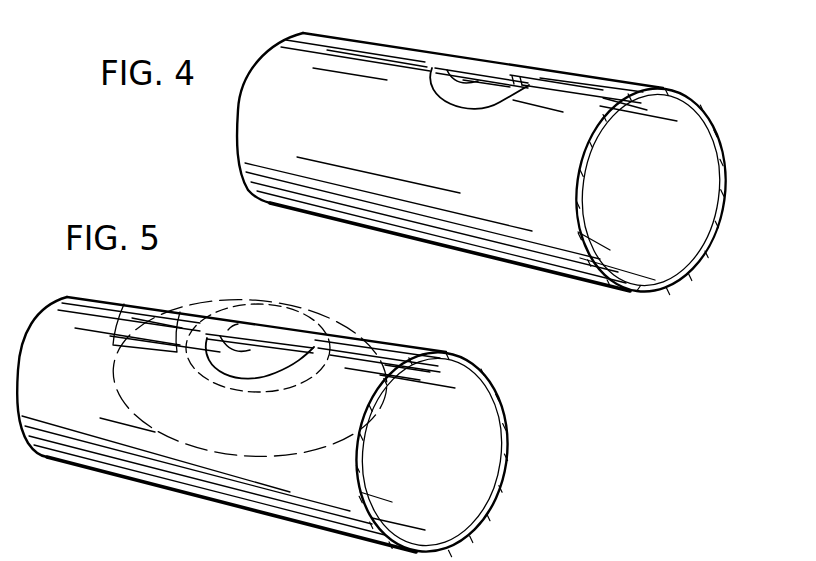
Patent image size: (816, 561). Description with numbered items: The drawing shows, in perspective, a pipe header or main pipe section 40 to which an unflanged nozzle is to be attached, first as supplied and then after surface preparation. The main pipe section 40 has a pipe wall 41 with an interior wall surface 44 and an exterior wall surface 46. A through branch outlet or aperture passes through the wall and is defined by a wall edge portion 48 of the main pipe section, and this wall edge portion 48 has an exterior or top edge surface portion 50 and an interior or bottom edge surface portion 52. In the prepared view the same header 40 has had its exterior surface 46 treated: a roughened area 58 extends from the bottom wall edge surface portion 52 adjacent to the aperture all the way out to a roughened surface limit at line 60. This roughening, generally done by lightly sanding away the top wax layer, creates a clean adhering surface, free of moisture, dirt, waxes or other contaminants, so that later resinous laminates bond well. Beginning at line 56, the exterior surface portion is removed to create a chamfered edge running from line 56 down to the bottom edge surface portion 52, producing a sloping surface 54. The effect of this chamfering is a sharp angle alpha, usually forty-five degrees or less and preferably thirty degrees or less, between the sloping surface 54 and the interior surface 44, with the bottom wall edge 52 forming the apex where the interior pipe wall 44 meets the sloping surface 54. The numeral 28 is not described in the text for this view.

In FIG. 4, the cable 28 is at (626, 4).
In FIG. 4, the main pipe section 40 is at (471, 262).
In FIG. 5, the main pipe section 40 is at (120, 482).
In FIG. 4, the pipe wall 41 is at (699, 107).
In FIG. 5, the pipe wall 41 is at (505, 430).
In FIG. 4, the interior wall surface 44 is at (677, 158).
In FIG. 5, the interior wall surface 44 is at (470, 460).
In FIG. 4, the exterior wall surface 46 is at (593, 107).
In FIG. 5, the exterior wall surface 46 is at (212, 478).
In FIG. 4, the wall edge portion 48 is at (470, 70).
In FIG. 5, the wall edge portion 48 is at (270, 334).
In FIG. 4, the exterior or top edge surface portion 50 is at (549, 105).
In FIG. 5, the exterior or top edge surface portion 50 is at (260, 358).
In FIG. 4, the interior or bottom edge surface portion 52 is at (477, 72).
In FIG. 5, the interior or bottom edge surface portion 52 is at (290, 345).
In FIG. 5, the sloping surface 54 is at (226, 328).
In FIG. 5, the line 56 is at (222, 305).
In FIG. 5, the roughened area 58 is at (160, 322).
In FIG. 5, the roughened surface limit line 60 is at (113, 305).